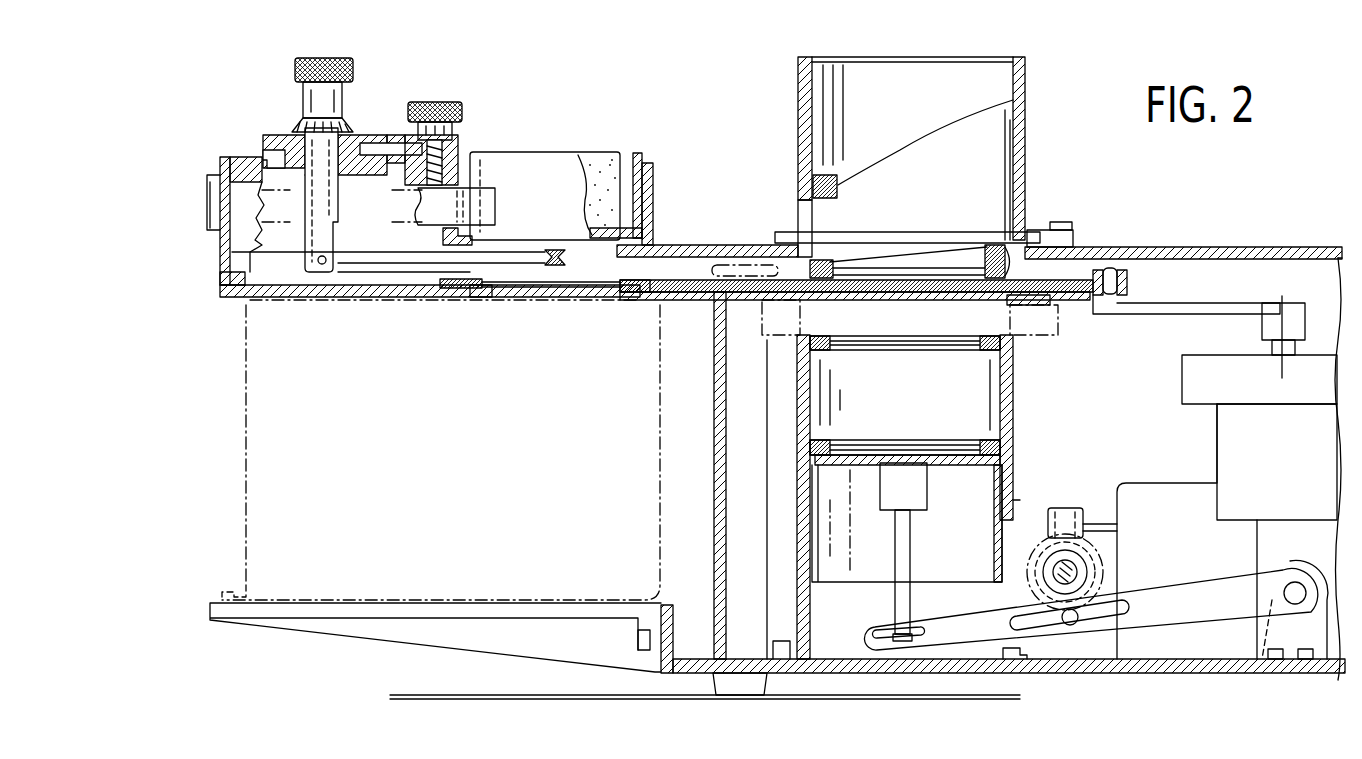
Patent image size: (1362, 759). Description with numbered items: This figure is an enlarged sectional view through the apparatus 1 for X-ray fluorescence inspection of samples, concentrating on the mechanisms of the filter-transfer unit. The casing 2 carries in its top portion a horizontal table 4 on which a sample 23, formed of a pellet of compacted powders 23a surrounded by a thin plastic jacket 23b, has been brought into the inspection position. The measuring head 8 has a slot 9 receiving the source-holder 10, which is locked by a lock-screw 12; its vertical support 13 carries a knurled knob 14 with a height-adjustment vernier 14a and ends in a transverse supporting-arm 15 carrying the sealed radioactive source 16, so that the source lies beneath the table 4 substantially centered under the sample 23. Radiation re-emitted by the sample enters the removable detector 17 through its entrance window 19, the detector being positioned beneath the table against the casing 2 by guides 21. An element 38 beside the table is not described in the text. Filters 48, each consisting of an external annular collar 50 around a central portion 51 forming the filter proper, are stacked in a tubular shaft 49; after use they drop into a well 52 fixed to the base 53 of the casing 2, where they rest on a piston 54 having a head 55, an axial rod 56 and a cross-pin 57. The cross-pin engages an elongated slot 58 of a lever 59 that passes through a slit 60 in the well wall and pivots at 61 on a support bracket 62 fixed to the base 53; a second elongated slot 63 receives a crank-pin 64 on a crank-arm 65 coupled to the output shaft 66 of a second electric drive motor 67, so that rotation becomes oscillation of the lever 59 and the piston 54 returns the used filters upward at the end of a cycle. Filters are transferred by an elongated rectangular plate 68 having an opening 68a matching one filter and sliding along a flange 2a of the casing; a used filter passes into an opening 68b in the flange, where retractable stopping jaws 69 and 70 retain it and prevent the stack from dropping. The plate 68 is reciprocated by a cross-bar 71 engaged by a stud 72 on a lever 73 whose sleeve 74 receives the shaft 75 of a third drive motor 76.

The apparatus 1 is at (1255, 232).
The casing 2 is at (714, 522).
The flange of the casing 2a is at (680, 300).
The horizontal table 4 is at (696, 245).
The measuring head 8 is at (220, 268).
The slot 9 is at (265, 152).
The source-holder 10 is at (272, 110).
The lock-screw 12 is at (455, 105).
The vertical support 13 is at (323, 214).
The knurled knob 14 is at (320, 78).
The height-adjustment vernier 14a is at (350, 130).
The transverse supporting-arm 15 is at (342, 292).
The sealed radioactive source 16 is at (556, 250).
The removable detector 17 is at (246, 476).
The entrance window 19 is at (495, 309).
The guides 21 is at (300, 614).
The sample 23 is at (558, 138).
The pellet of compacted powders 23a is at (600, 160).
The thin jacket of plastic material 23b is at (527, 152).
The support bar 38 is at (650, 182).
The filter 48 is at (838, 180).
The tubular shaft 49 is at (798, 113).
The external annular collar 50 is at (1016, 270).
The central portion 51 is at (873, 270).
The well 52 is at (1013, 412).
The base of the casing 53 is at (848, 661).
The piston 54 is at (948, 465).
The head 55 is at (880, 494).
The axial rod 56 is at (895, 558).
The cross-pin 57 is at (896, 630).
The elongated slot 58 is at (928, 628).
The lever 59 is at (1220, 590).
The slit 60 is at (1014, 507).
The pivot 61 is at (1295, 582).
The support bracket 62 is at (1275, 638).
The second elongated slot 63 is at (1108, 618).
The crank-pin 64 is at (1070, 616).
The crank-arm 65 is at (1078, 588).
The output shaft 66 is at (1066, 560).
The second electric drive motor 67 is at (1190, 527).
The elongated rectangular plate 68 is at (1062, 280).
The opening 68a is at (448, 290).
The opening 68b is at (820, 295).
The retractable stopping jaw 69 is at (1030, 310).
The retractable stopping jaw 70 is at (762, 320).
The cross-bar 71 is at (1127, 284).
The stud 72 is at (1116, 270).
The lever 73 is at (1205, 303).
The sleeve 74 is at (1300, 326).
The shaft 75 is at (1275, 348).
The third drive motor 76 is at (1256, 393).